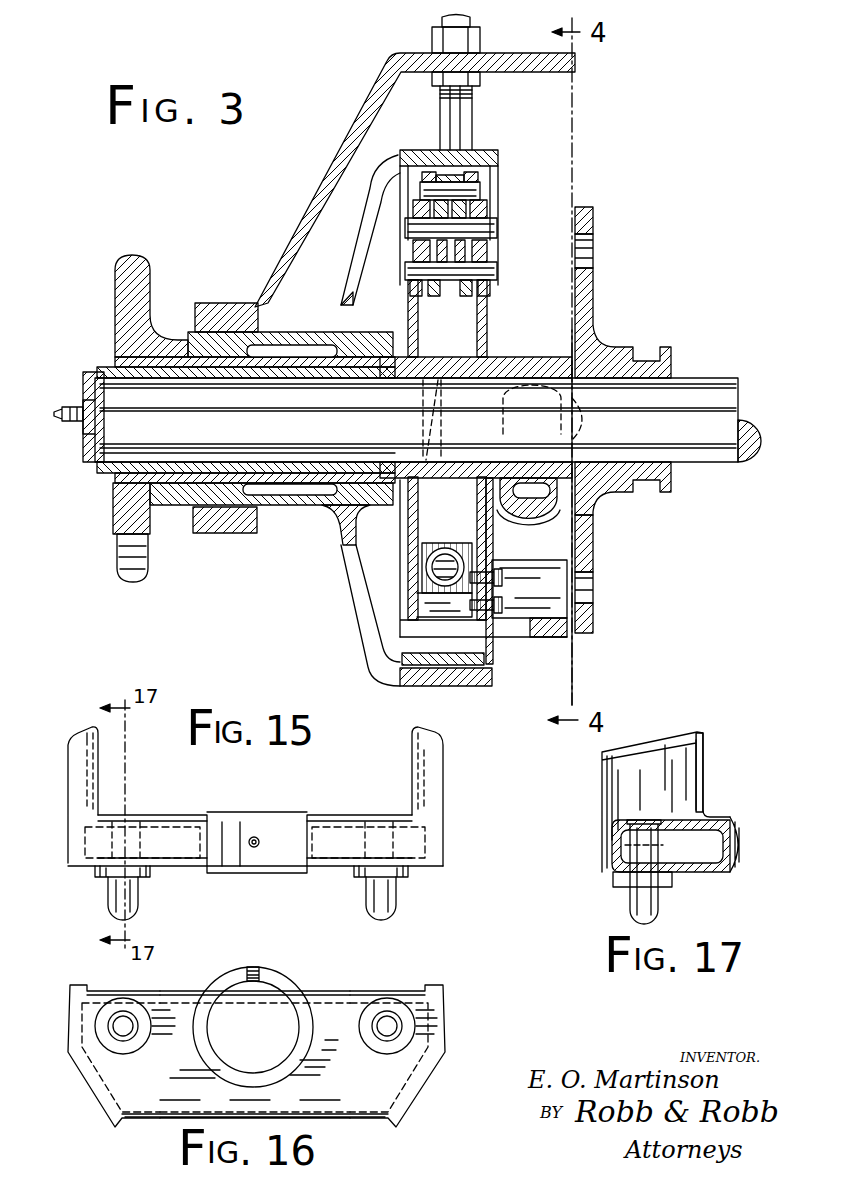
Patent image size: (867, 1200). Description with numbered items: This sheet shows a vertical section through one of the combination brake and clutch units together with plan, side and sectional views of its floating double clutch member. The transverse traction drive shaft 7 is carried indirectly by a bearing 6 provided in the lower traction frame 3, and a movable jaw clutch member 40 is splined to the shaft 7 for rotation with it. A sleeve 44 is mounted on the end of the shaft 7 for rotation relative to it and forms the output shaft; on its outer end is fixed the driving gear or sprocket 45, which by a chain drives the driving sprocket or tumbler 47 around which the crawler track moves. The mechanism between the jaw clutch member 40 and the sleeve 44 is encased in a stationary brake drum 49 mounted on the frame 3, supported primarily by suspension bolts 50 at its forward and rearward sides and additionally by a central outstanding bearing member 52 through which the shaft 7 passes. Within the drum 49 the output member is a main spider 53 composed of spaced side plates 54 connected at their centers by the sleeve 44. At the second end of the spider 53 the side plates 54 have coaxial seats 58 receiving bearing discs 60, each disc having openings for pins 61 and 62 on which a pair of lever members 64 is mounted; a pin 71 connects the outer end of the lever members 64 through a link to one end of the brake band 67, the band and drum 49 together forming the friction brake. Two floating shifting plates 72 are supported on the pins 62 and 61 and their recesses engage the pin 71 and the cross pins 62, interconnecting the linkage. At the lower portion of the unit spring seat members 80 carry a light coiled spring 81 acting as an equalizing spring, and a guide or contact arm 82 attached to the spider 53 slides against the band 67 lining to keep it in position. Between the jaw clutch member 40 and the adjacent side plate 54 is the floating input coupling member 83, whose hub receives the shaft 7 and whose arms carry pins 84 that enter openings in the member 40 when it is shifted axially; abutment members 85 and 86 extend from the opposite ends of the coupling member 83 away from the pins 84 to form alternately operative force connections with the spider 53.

In FIG. 3, the lower traction frame 3 is at (366, 111).
In FIG. 3, the bearing 6 is at (230, 533).
In FIG. 3, the traction drive shaft 7 is at (730, 402).
In FIG. 3, the movable jaw clutch member 40 is at (594, 292).
In FIG. 3, the sleeve 44 is at (292, 505).
In FIG. 3, the driving gear or sprocket 45 is at (118, 510).
In FIG. 3, the driving sprocket or tumbler 47 is at (480, 150).
In FIG. 3, the stationary brake drum 49 is at (350, 568).
In FIG. 3, the suspension bolt 50 is at (466, 118).
In FIG. 3, the central outstanding bearing member 52 is at (320, 506).
In FIG. 3, the main spider 53 is at (490, 318).
In FIG. 3, the side plate 54 is at (480, 335).
In FIG. 3, the seat 58 is at (410, 292).
In FIG. 3, the bearing disc 60 is at (416, 250).
In FIG. 3, the pin 61 is at (452, 292).
In FIG. 3, the pin 62 is at (488, 226).
In FIG. 3, the lever member 64 is at (420, 210).
In FIG. 3, the brake band 67 is at (472, 684).
In FIG. 3, the pin 71 is at (448, 190).
In FIG. 3, the floating shifting plate 72 is at (430, 170).
In FIG. 3, the spring seat member 80 is at (446, 556).
In FIG. 3, the coiled spring 81 is at (466, 560).
In FIG. 3, the guide or contact arm 82 is at (494, 646).
In FIG. 3, the floating input coupling member 83 is at (518, 357).
In FIG. 15, the floating input coupling member 83 is at (270, 812).
In FIG. 16, the floating input coupling member 83 is at (290, 986).
In FIG. 17, the floating input coupling member 83 is at (690, 874).
In FIG. 3, the pin 84 is at (502, 420).
In FIG. 15, the pin 84 is at (140, 898).
In FIG. 16, the pin 84 is at (125, 1012).
In FIG. 17, the pin 84 is at (630, 908).
In FIG. 15, the abutment member 85 is at (70, 768).
In FIG. 16, the abutment member 85 is at (72, 1027).
In FIG. 17, the abutment member 85 is at (690, 772).
In FIG. 15, the abutment member 86 is at (442, 760).
In FIG. 16, the abutment member 86 is at (438, 1030).